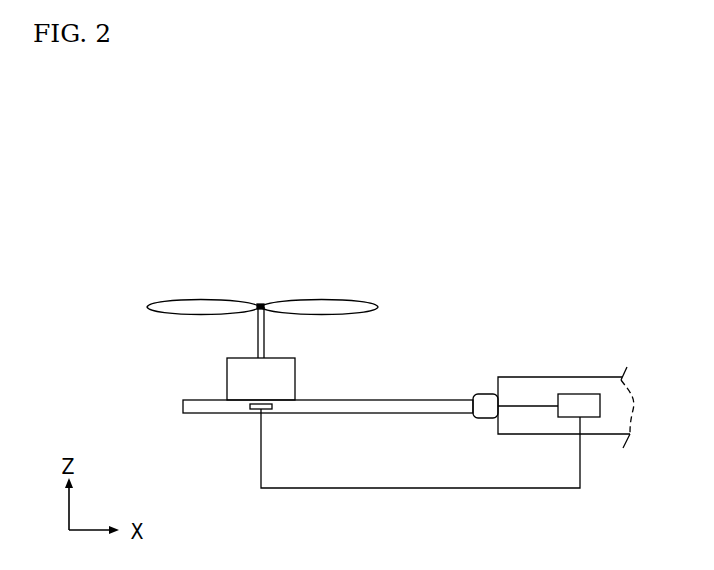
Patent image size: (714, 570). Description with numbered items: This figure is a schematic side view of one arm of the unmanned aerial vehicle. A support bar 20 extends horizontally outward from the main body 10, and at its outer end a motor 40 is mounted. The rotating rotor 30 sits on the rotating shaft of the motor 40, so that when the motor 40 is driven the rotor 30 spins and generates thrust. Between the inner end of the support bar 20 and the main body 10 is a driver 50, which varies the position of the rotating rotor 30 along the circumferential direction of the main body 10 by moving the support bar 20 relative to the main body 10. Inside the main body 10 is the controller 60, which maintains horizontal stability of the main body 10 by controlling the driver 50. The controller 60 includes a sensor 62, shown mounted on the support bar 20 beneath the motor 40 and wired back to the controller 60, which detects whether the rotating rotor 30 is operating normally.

The main body 10 is at (532, 372).
The support bar 20 is at (203, 413).
The rotating rotor 30 is at (322, 300).
The motor 40 is at (232, 373).
The driver 50 is at (477, 388).
The controller 60 is at (588, 394).
The sensor 62 is at (255, 410).